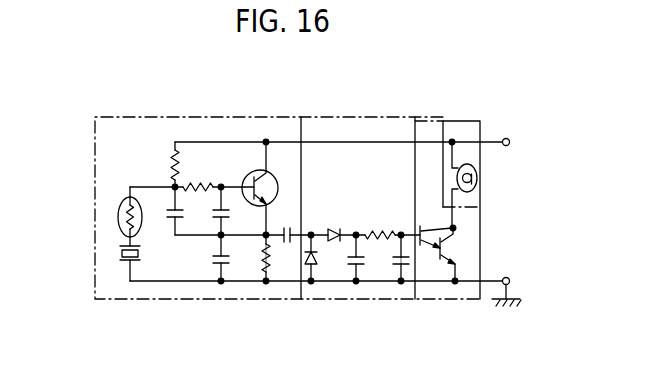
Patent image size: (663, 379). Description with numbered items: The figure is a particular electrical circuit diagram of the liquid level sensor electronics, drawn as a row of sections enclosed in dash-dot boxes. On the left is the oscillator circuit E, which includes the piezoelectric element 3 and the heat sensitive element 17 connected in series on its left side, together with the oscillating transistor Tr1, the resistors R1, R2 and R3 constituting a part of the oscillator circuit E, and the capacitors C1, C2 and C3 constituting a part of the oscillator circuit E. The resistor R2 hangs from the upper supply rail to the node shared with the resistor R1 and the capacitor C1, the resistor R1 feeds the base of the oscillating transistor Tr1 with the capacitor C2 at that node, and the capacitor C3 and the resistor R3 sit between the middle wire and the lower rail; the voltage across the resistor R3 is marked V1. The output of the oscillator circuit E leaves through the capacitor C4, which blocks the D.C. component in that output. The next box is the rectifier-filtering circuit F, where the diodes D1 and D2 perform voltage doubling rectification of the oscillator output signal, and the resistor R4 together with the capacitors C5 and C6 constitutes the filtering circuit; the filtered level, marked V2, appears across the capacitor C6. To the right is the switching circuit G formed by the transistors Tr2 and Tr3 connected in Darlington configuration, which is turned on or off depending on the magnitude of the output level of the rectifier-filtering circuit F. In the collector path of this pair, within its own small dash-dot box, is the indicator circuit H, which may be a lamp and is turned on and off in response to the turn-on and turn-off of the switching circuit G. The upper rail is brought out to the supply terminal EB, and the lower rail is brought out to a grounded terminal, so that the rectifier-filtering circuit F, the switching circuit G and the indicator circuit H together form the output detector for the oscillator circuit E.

The heat sensitive element 17 is at (118, 222).
The piezoelectric element 3 is at (118, 258).
The oscillator circuit E is at (237, 300).
The rectifier-filtering circuit F is at (359, 300).
The switching circuit G is at (461, 300).
The indicator circuit H is at (478, 178).
The supply voltage terminal EB is at (510, 142).
The resistor R1 is at (192, 174).
The resistor R2 is at (163, 164).
The resistor R3 is at (255, 258).
The resistor R4 is at (392, 222).
The capacitor C1 is at (165, 212).
The capacitor C2 is at (232, 213).
The capacitor C3 is at (209, 258).
The capacitor C4 is at (301, 226).
The capacitor C5 is at (368, 258).
The capacitor C6 is at (399, 270).
The diode D1 is at (324, 258).
The diode D2 is at (343, 223).
The oscillating transistor Tr1 is at (271, 188).
The transistor Tr2 is at (434, 226).
The transistor Tr3 is at (463, 253).
The voltage V1 is at (280, 259).
The voltage V2 is at (417, 263).